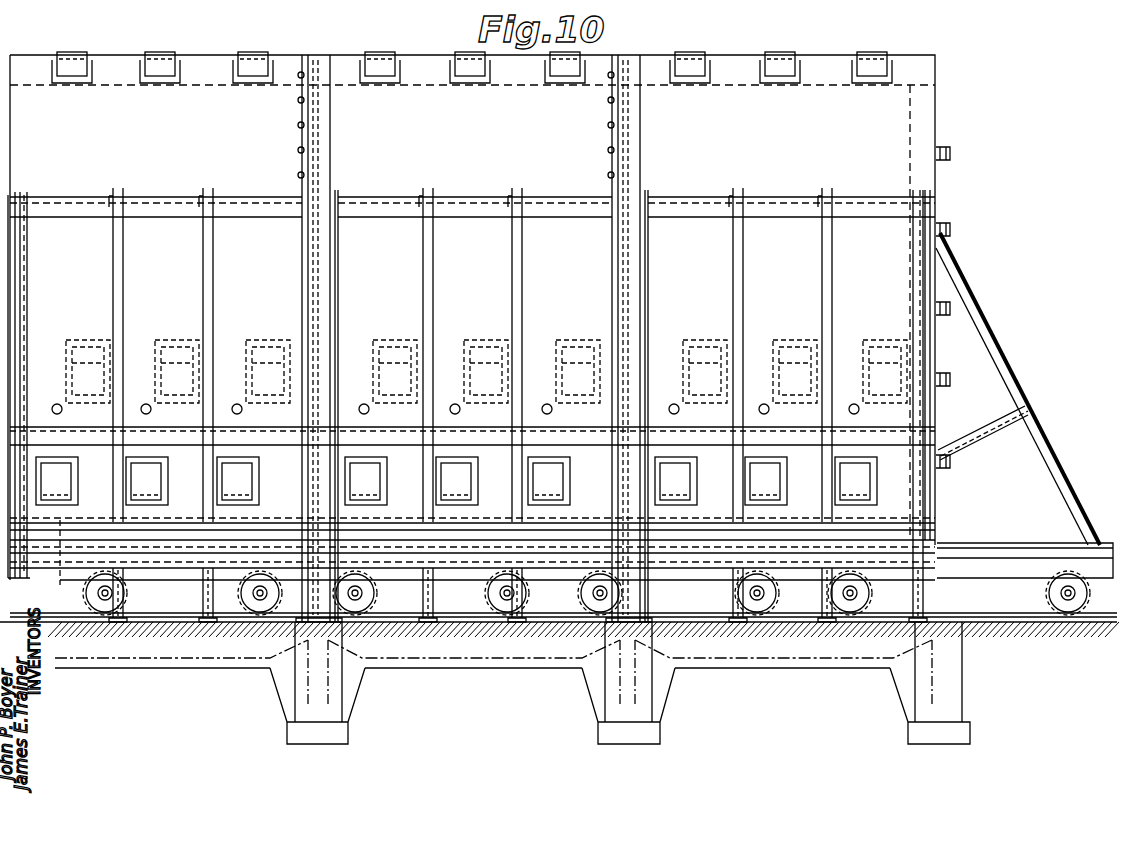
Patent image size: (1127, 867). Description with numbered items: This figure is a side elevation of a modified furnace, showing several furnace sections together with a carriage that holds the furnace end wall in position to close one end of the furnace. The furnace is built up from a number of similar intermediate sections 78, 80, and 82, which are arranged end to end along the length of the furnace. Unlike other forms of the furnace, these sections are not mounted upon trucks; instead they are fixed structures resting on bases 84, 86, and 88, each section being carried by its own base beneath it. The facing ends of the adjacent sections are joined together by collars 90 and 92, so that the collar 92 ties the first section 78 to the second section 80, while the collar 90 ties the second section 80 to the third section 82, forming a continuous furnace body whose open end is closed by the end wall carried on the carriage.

The intermediate furnace section 78 is at (153, 207).
The intermediate furnace section 80 is at (465, 207).
The intermediate furnace section 82 is at (777, 207).
The base 84 is at (326, 738).
The base 86 is at (643, 735).
The base 88 is at (942, 735).
The collar 90 is at (636, 126).
The collar 92 is at (325, 128).